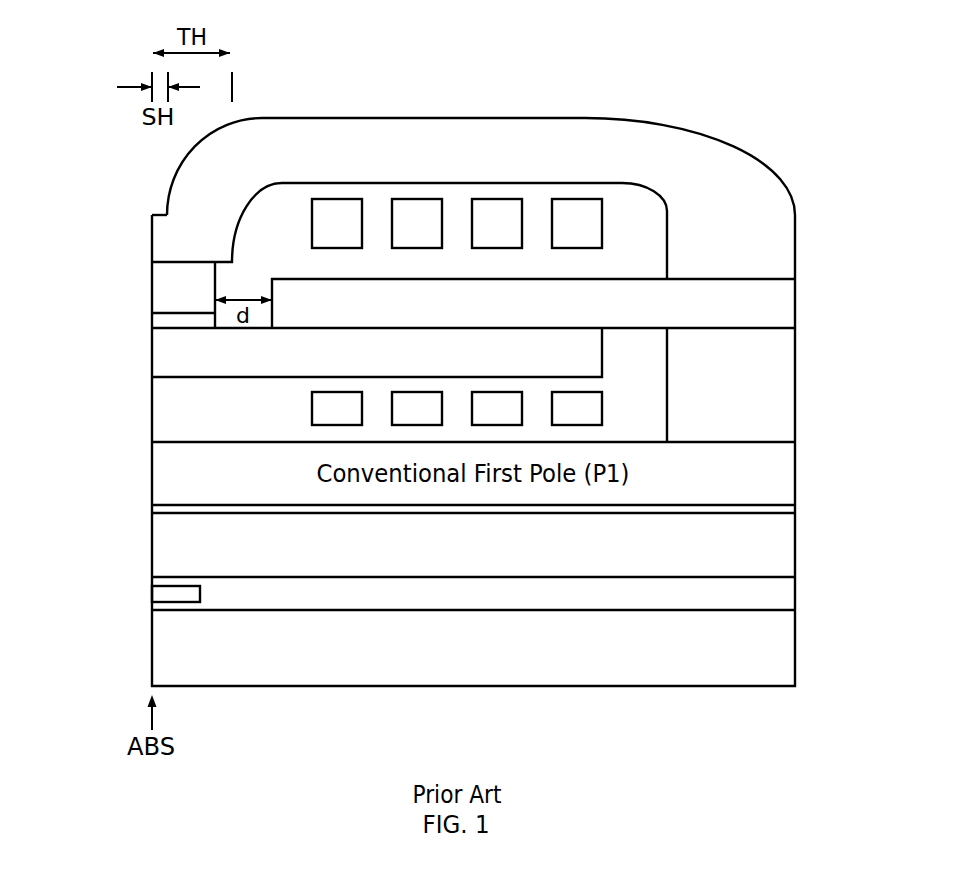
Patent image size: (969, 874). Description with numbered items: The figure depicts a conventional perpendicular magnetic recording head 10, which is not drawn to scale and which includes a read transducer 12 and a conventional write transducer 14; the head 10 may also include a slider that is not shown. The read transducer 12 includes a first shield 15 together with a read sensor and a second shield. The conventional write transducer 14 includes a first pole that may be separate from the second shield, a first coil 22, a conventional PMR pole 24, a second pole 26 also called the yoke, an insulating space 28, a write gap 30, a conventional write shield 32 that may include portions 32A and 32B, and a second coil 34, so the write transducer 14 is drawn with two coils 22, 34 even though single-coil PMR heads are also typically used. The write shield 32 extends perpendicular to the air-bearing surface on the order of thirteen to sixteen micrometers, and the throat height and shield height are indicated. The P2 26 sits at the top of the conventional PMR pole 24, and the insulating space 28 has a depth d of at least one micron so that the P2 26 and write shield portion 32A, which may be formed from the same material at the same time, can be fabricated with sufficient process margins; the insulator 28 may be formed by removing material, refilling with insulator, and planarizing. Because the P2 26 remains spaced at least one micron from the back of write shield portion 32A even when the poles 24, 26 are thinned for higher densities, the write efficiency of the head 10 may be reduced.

The conventional perpendicular magnetic recording (PMR) head 10 is at (458, 36).
The read transducer 12 is at (827, 515).
The conventional write transducer 14 is at (827, 118).
The first shield (S1) 15 is at (797, 650).
The first coil 22 is at (152, 445).
The conventional PMR pole 24 is at (152, 357).
The second pole (P2) 26 is at (286, 409).
The insulating space 28 is at (248, 283).
The write gap 30 is at (152, 312).
The conventional write shield 32 is at (316, 100).
The write shield portion 32A is at (152, 270).
The write shield portion 32B is at (175, 182).
The second coil 34 is at (633, 222).